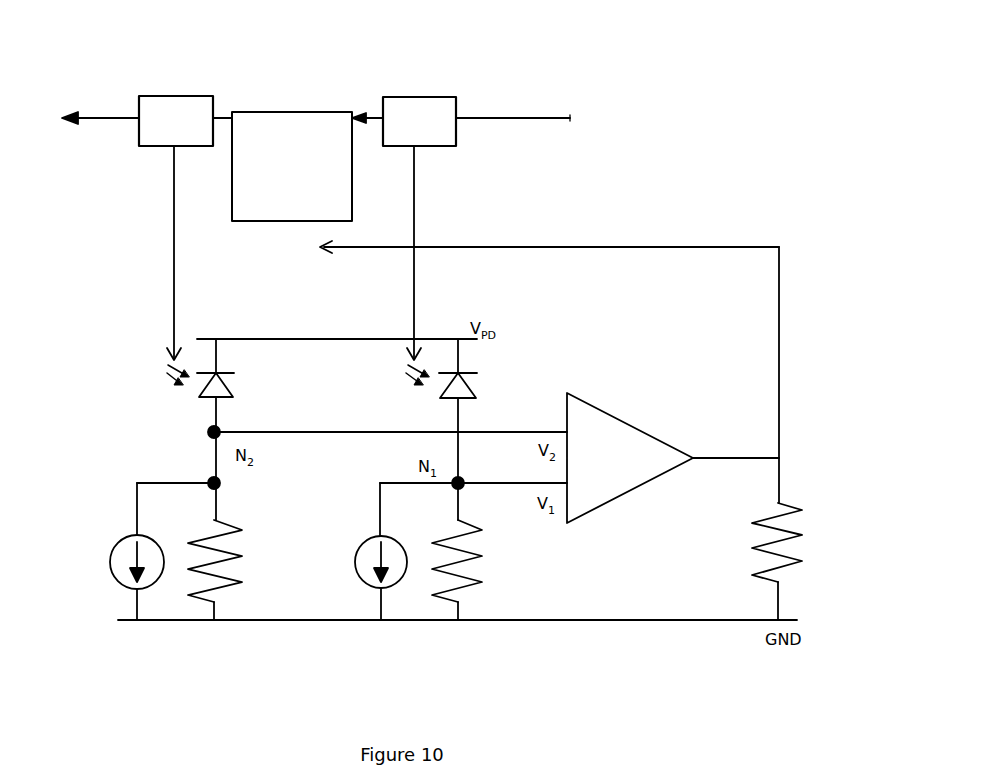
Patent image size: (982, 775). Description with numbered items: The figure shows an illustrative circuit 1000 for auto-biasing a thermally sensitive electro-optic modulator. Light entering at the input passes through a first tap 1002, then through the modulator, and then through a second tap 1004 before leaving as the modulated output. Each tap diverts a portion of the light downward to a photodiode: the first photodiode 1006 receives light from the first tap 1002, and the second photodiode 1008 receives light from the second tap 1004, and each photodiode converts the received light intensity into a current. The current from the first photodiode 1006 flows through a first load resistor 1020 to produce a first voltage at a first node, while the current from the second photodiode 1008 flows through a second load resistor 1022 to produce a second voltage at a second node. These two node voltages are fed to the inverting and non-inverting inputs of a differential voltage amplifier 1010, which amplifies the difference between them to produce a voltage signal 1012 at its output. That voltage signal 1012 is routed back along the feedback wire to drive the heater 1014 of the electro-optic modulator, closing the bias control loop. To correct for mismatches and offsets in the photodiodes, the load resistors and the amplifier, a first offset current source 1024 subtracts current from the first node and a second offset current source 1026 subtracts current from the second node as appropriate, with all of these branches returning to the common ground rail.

The auto-biasing circuit 1000 is at (663, 116).
The Tap 1 1002 is at (419, 102).
The Tap 2 1004 is at (180, 102).
The photodiode PD1 1006 is at (472, 385).
The photodiode PD2 1008 is at (203, 397).
The differential voltage amplifier 1010 is at (632, 425).
The voltage signal 1012 is at (779, 458).
The heater 1014 is at (252, 266).
The load resistor RL1 1020 is at (468, 588).
The load resistor RL2 1022 is at (225, 597).
The offset current source Ioffset,1 1024 is at (363, 540).
The offset current source Ioffset,2 1026 is at (118, 543).